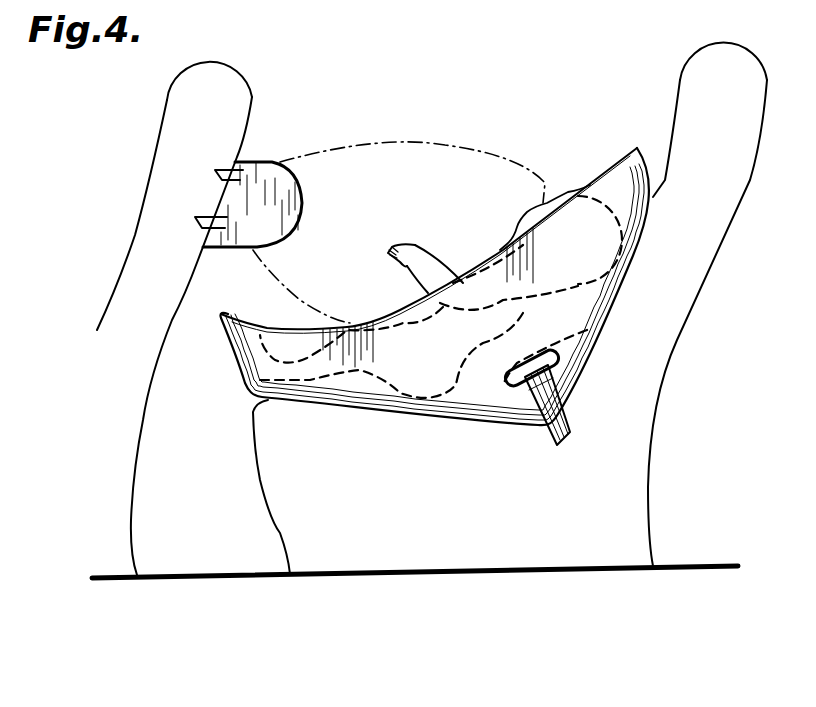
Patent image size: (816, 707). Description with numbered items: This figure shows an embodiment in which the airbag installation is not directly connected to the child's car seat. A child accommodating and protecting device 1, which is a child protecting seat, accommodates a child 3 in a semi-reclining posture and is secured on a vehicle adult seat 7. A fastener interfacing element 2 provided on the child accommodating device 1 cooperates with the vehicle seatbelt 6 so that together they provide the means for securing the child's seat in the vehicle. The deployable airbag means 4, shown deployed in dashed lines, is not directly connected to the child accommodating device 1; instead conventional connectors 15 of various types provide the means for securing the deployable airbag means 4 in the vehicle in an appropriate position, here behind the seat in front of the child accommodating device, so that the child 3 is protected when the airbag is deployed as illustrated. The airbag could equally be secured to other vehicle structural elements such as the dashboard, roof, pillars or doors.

The child accommodating and protecting device 1 is at (250, 395).
The fastener interfacing element 2 is at (548, 360).
The child 3 is at (567, 188).
The deployable airbag means 4 is at (445, 145).
The vehicle seatbelt 6 is at (543, 395).
The vehicle adult seat 7 is at (650, 505).
The conventional connectors 15 is at (193, 218).